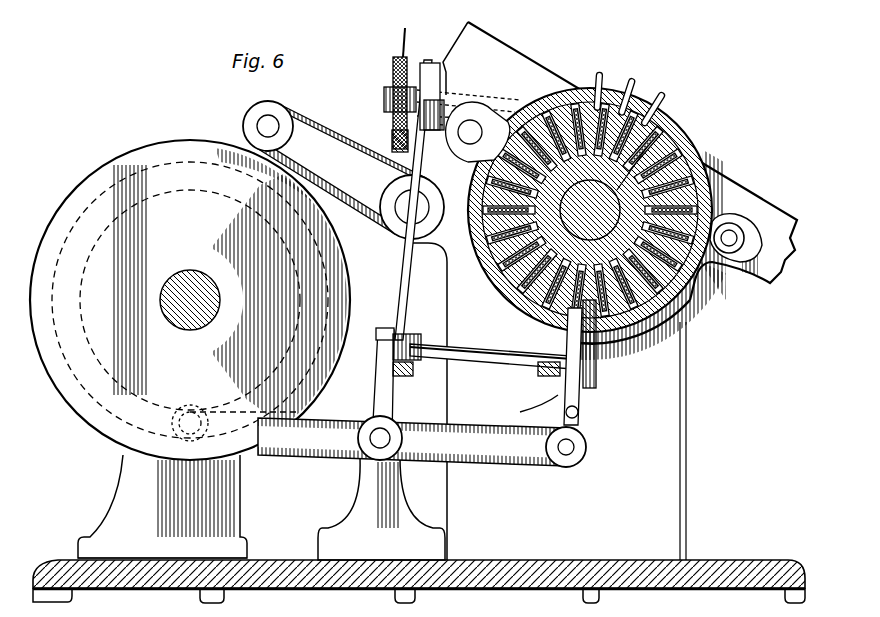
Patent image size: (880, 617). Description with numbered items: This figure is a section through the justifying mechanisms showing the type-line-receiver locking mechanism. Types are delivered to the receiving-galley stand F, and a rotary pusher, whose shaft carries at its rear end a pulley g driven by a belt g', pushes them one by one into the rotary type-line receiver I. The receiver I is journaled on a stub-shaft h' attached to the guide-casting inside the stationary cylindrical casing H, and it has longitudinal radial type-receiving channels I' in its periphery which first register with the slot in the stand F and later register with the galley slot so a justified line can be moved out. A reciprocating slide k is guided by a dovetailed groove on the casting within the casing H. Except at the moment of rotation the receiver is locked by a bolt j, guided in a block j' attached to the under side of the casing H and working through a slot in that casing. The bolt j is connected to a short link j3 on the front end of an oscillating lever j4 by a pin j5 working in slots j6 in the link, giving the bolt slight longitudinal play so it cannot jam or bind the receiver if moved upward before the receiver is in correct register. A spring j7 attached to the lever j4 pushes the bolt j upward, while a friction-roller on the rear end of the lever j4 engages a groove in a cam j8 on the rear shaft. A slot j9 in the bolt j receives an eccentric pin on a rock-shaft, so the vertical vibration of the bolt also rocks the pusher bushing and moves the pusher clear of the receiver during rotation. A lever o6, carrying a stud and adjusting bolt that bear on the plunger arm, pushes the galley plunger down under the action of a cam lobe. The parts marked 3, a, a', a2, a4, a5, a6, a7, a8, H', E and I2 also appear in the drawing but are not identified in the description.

The grinding wheel 3 is at (195, 300).
The pulley g is at (391, 104).
The belt g' is at (420, 39).
The brush wheel a is at (590, 205).
The brush pins a' is at (511, 99).
The pin holders a2 is at (471, 100).
The bracket a4 is at (450, 82).
The lever a5 is at (410, 272).
The block a6 is at (412, 372).
The rod a7 is at (398, 332).
The stop a8 is at (548, 380).
The reciprocating slide k is at (480, 165).
The lever o6 is at (343, 170).
The receiving-galley stand F is at (735, 226).
The cylindrical casing H is at (692, 441).
The frame plate H' is at (649, 231).
The stub-shaft h' is at (702, 139).
The frame member E is at (652, 338).
The rotary type-line receiver I is at (731, 205).
The roller arm I2 is at (720, 205).
The type-receiving channels I' is at (721, 295).
The bolt j is at (590, 407).
The block j' is at (594, 366).
The short link j3 is at (588, 452).
The oscillating lever j4 is at (412, 441).
The pin j5 is at (584, 432).
The slots j6 is at (582, 418).
The spring j7 is at (519, 401).
The cam j8 is at (372, 380).
The slot j9 is at (596, 374).